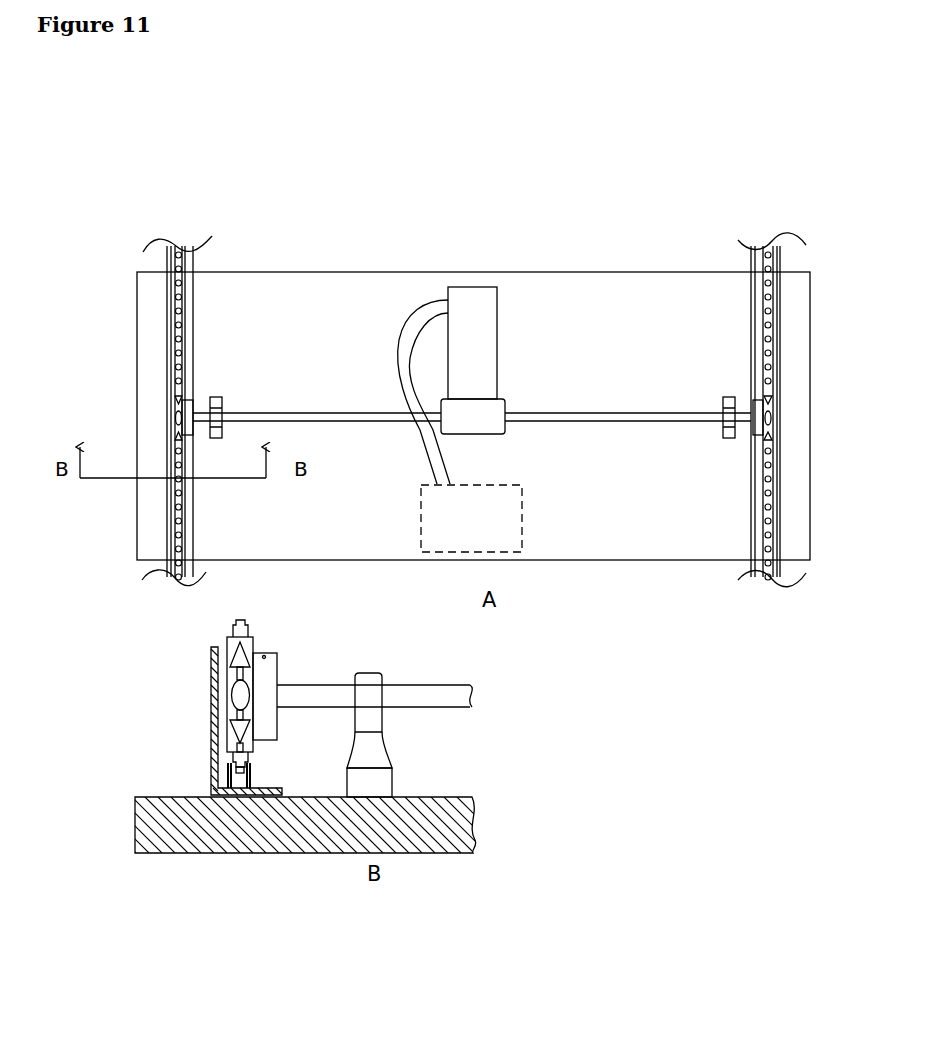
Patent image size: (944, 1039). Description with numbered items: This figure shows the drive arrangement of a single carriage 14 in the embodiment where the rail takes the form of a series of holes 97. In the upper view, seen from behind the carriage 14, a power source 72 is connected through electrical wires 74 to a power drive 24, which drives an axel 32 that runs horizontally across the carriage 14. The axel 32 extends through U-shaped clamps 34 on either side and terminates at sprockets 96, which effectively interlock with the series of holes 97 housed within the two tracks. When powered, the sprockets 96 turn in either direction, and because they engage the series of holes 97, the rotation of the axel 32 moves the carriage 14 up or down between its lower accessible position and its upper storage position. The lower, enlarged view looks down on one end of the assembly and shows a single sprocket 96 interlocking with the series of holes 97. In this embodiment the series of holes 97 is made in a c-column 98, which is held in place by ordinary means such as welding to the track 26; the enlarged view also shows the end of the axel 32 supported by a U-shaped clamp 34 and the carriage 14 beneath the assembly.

The carriage 14 is at (137, 318).
The power drive 24 is at (497, 313).
The track 26 is at (211, 658).
The axel 32 is at (613, 421).
The U-shaped clamps 34 is at (220, 397).
The power source 72 is at (520, 533).
The electrical wires 74 is at (405, 318).
The sprockets 96 is at (173, 415).
The series of holes 97 is at (181, 318).
The c-column 98 is at (250, 765).